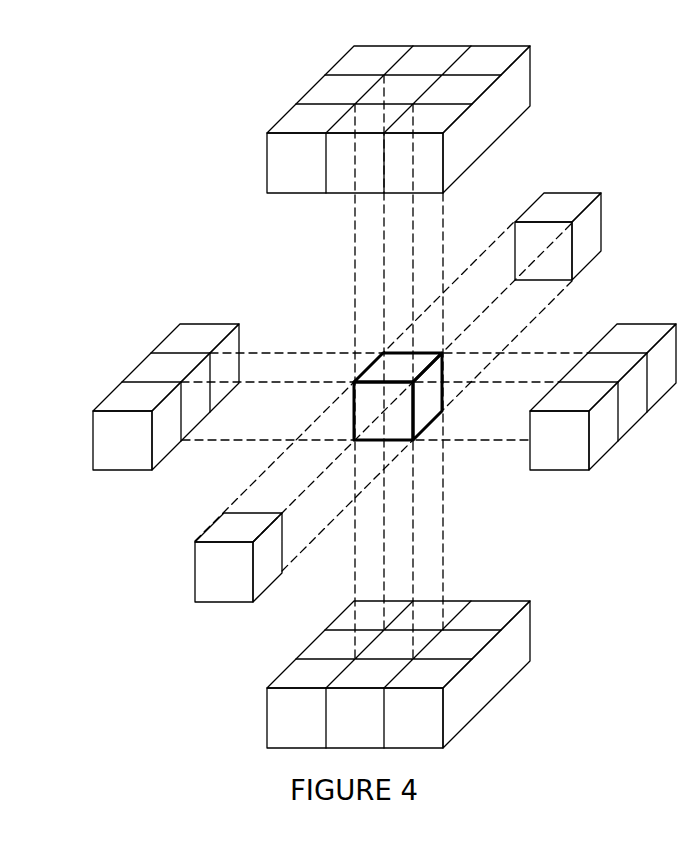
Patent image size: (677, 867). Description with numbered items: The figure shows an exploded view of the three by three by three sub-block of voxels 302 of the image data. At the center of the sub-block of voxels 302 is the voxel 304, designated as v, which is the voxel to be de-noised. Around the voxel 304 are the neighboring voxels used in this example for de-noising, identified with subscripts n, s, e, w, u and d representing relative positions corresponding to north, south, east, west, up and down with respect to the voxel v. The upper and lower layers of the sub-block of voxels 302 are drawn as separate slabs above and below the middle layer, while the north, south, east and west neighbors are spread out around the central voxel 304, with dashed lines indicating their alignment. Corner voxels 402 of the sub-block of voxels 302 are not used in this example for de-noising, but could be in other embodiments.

The sub-block of voxels 302 is at (134, 124).
The voxel 304 is at (428, 397).
The corner voxels 402 is at (402, 397).